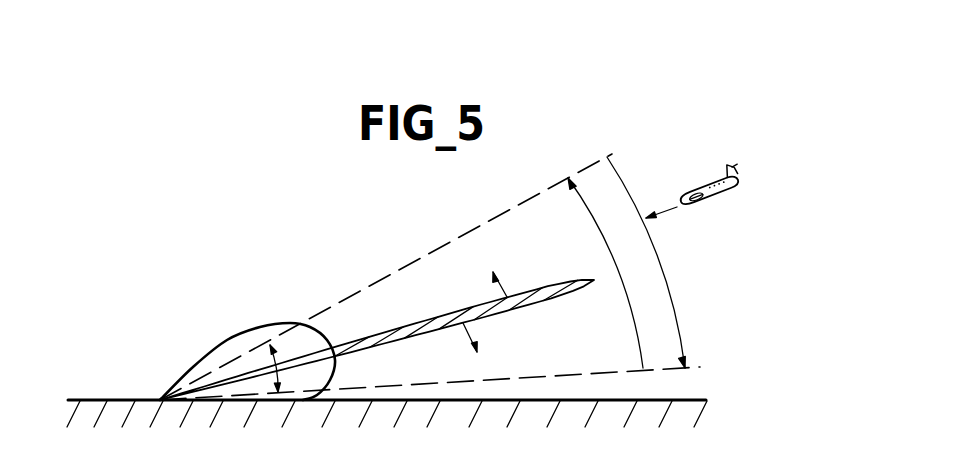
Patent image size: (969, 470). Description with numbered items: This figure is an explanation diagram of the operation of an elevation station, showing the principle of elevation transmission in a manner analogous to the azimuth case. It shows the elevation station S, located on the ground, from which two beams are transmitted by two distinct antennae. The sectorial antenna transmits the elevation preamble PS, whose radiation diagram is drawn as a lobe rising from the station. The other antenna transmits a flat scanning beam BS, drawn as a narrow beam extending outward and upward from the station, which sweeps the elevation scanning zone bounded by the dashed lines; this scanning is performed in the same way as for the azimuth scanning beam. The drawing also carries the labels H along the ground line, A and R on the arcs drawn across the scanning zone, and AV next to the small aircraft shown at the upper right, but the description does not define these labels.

The horizon / ground plane H is at (110, 399).
The elevation station S is at (163, 399).
The elevation preamble PS is at (203, 345).
The flat scanning beam BS is at (538, 283).
The arc of beam sweep / aspect A is at (616, 275).
The range arc R is at (655, 257).
The aircraft vehicle with velocity AV is at (694, 189).